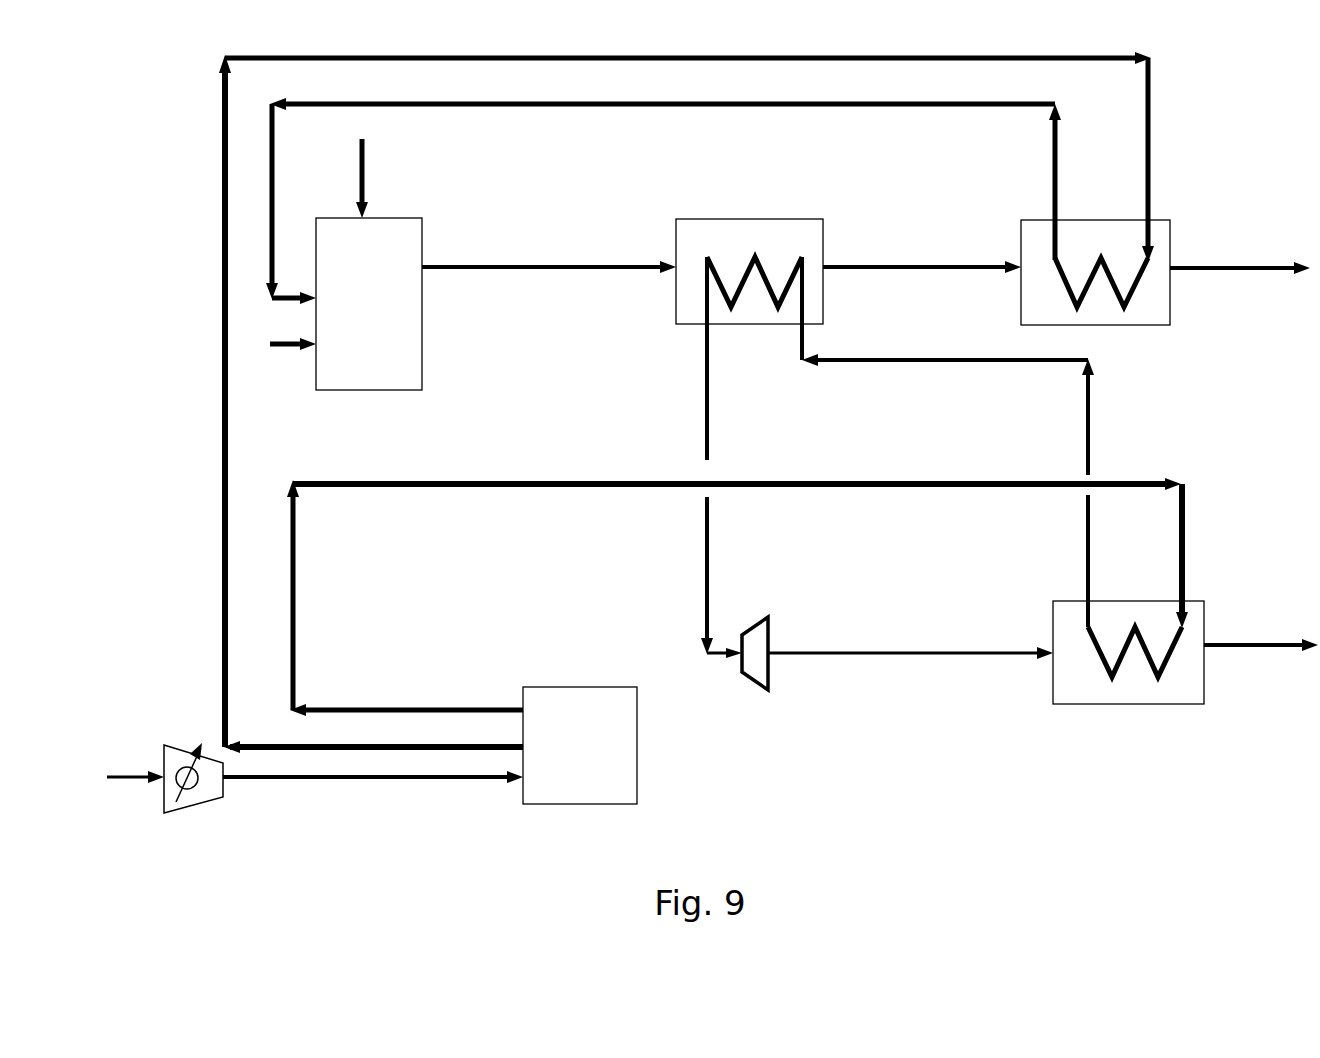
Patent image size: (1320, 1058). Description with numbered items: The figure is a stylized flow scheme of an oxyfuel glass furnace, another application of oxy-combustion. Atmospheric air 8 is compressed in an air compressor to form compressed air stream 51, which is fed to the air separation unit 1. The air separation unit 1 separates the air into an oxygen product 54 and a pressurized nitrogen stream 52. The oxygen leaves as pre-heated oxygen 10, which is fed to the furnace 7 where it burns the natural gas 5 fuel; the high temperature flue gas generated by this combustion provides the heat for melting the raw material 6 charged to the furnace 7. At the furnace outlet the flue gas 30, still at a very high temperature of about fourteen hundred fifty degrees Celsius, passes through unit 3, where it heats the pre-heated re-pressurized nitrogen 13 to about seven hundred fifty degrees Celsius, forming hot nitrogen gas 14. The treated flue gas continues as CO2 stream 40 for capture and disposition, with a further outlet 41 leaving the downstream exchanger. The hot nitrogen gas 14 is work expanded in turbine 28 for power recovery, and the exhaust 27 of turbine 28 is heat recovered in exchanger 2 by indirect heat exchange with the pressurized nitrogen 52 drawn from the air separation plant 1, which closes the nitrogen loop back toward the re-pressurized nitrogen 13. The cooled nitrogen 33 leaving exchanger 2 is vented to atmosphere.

The air separation unit 1 is at (628, 757).
The exchanger 2 is at (1098, 698).
The unit 3 is at (755, 232).
The natural gas 5 is at (283, 364).
The raw material 6 is at (365, 168).
The oxy-combustion boiler 7 is at (398, 342).
The atmospheric air 8 is at (137, 780).
The oxygen stream 10 is at (605, 105).
The pre-heated re-pressurized nitrogen 13 is at (1090, 415).
The hot nitrogen gas 14 is at (703, 363).
The exhaust 27 is at (995, 663).
The turbine 28 is at (752, 665).
The flue gas 30 is at (478, 269).
The cooled nitrogen 33 is at (1237, 652).
The CO2 stream 40 is at (872, 266).
The outlet stream 41 is at (1197, 270).
The compressed air stream 51 is at (292, 780).
The pressurized nitrogen stream 52 is at (477, 708).
The oxygen product 54 is at (220, 575).